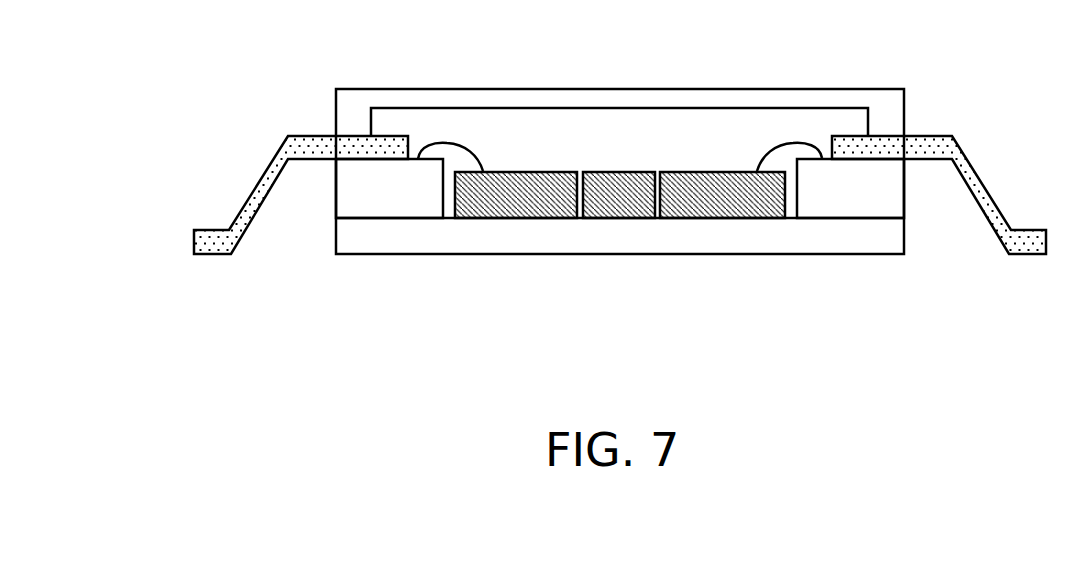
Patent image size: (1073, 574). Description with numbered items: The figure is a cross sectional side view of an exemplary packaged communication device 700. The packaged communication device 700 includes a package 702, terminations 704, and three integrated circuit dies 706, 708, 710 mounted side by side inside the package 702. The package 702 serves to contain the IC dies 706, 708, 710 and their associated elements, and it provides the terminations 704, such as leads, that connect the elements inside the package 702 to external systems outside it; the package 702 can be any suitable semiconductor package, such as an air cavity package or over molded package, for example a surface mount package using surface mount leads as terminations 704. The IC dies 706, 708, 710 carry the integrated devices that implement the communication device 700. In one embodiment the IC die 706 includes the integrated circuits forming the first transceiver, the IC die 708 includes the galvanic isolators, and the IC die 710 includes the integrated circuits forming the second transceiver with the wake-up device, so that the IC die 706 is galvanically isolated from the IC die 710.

The packaged communication device 700 is at (597, 198).
The package 702 is at (632, 89).
The terminations 704 is at (220, 230).
The IC die 706 is at (548, 171).
The IC die 708 is at (643, 171).
The IC die 710 is at (752, 171).